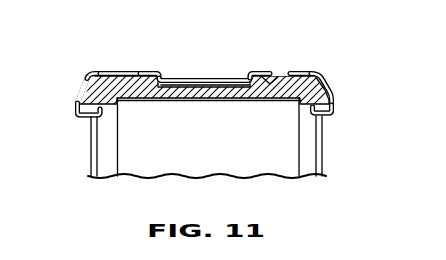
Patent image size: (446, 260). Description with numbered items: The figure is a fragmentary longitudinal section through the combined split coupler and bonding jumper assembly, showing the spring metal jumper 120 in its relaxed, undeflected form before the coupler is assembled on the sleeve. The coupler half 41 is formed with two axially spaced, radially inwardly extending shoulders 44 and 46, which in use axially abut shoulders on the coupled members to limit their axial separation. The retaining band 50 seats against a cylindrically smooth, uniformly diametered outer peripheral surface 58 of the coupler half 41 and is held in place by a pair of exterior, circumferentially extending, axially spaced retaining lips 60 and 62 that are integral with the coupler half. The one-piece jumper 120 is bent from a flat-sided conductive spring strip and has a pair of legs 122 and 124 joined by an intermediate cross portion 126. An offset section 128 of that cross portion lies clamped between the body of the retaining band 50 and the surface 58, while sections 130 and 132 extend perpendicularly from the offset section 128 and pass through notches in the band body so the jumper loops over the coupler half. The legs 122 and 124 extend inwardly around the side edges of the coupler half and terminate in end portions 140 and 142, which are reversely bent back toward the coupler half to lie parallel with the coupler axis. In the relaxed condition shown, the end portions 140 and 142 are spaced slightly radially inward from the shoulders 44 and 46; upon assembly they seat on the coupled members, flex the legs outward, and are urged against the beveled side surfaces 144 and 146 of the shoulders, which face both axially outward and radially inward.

The coupler half 41 is at (319, 71).
The shoulder 44 is at (120, 103).
The shoulder 46 is at (298, 100).
The retaining band 50 is at (208, 86).
The outer peripheral surface 58 is at (173, 85).
The retaining lip 60 is at (150, 72).
The retaining lip 62 is at (270, 78).
The jumper 120 is at (339, 63).
The leg 122 is at (88, 76).
The leg 124 is at (334, 96).
The intermediate cross portion 126 is at (121, 72).
The offset section 128 is at (222, 99).
The section 130 is at (164, 76).
The section 132 is at (251, 72).
The end portion 140 is at (90, 124).
The end portion 142 is at (325, 135).
The side surface 144 is at (76, 103).
The side surface 146 is at (335, 113).